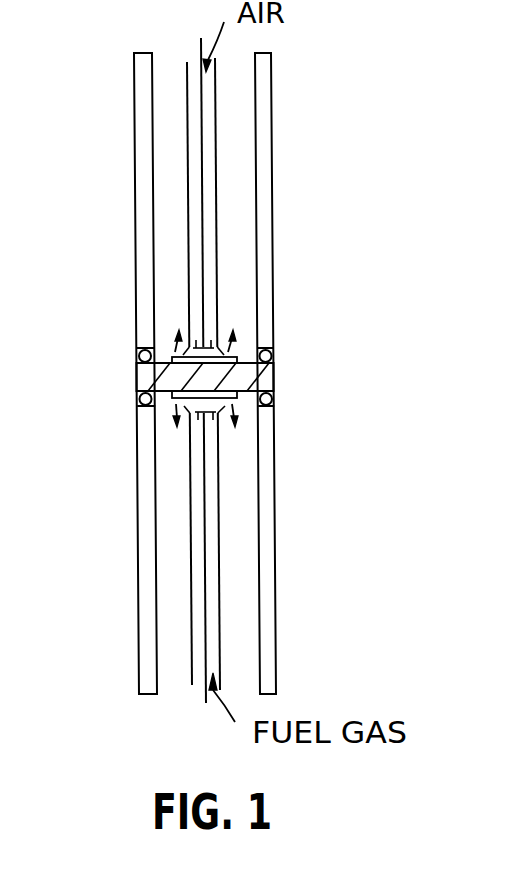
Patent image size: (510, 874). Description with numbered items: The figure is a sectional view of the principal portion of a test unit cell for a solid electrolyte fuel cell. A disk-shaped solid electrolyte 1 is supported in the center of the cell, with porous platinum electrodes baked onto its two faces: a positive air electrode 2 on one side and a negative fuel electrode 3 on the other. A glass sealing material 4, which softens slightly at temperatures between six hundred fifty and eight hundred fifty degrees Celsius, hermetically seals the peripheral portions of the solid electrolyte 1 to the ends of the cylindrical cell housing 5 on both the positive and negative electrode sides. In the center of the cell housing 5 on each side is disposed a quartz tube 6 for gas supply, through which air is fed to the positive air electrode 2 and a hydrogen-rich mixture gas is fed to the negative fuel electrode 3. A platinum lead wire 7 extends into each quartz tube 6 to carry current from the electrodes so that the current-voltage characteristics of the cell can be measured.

The solid electrolyte 1 is at (267, 381).
The positive air electrode 2 is at (173, 356).
The negative fuel electrode 3 is at (173, 402).
The sealing material 4 is at (137, 357).
The cell housing 5 is at (273, 192).
The quartz tube for gas supply 6 is at (217, 142).
The platinum lead wire 7 is at (200, 53).